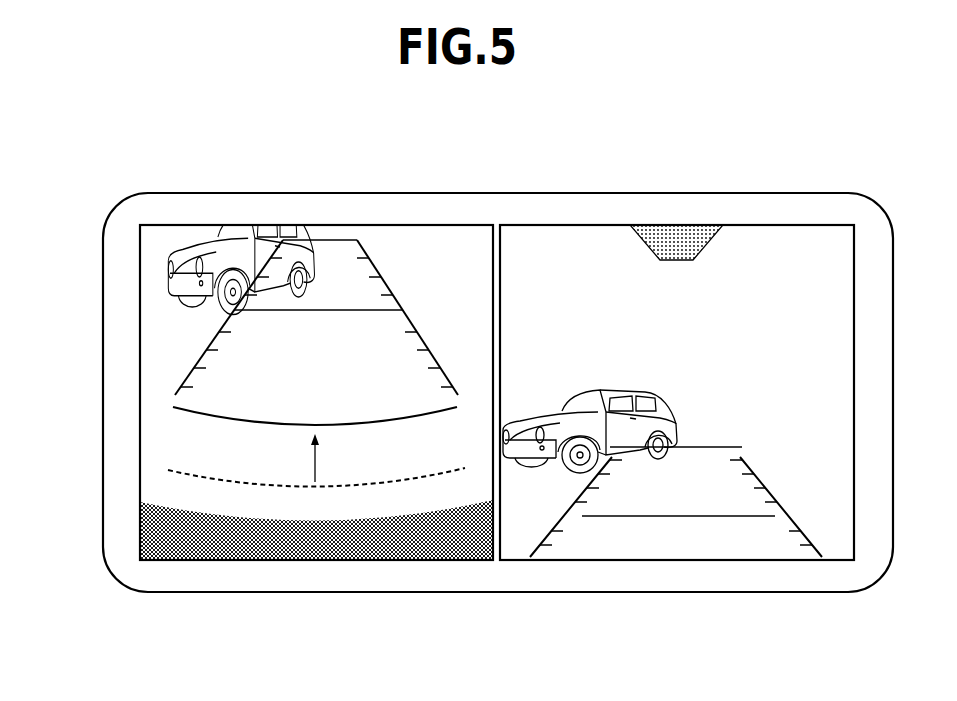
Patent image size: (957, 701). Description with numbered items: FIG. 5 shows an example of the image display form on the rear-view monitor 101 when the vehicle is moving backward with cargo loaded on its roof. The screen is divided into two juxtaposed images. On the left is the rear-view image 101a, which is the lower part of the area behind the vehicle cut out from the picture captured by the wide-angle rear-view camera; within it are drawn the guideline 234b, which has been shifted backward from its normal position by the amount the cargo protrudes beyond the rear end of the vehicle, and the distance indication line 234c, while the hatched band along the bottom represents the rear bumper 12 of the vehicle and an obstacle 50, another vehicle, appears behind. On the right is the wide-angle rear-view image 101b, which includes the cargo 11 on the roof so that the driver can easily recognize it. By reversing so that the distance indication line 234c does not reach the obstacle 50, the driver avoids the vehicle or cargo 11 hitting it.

The rear-view monitor 101 is at (458, 205).
The rear-view image 101a is at (315, 562).
The wide-angle rear-view image 101b is at (672, 562).
The cargo 11 is at (678, 240).
The rear bumper 12 is at (423, 540).
The obstacle 50 is at (237, 250).
The guideline 234b is at (193, 368).
The distance indication line 234c is at (237, 420).